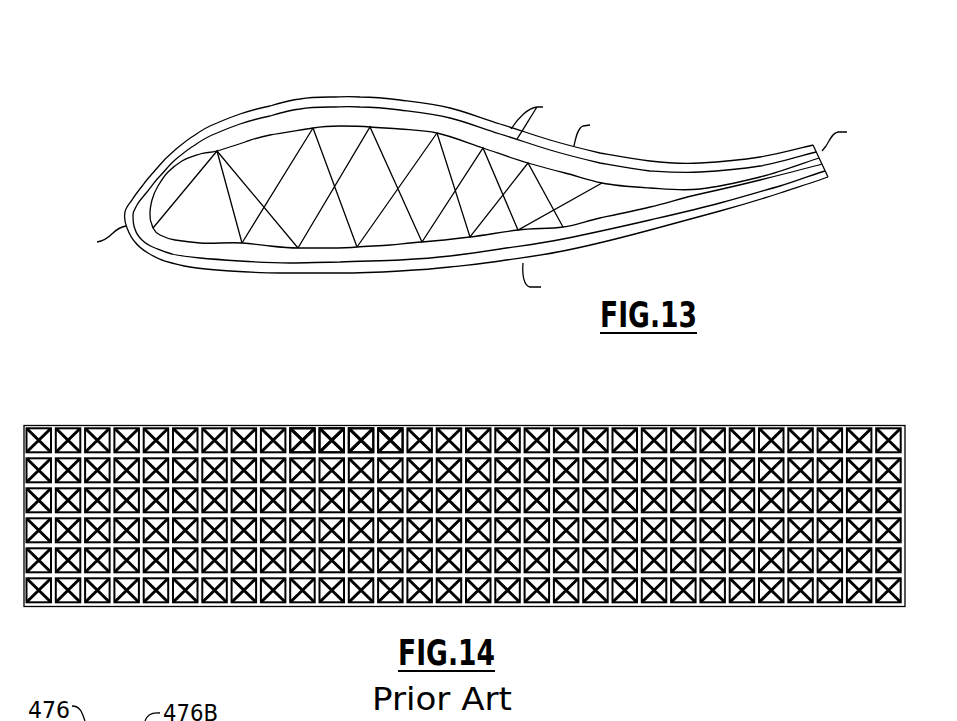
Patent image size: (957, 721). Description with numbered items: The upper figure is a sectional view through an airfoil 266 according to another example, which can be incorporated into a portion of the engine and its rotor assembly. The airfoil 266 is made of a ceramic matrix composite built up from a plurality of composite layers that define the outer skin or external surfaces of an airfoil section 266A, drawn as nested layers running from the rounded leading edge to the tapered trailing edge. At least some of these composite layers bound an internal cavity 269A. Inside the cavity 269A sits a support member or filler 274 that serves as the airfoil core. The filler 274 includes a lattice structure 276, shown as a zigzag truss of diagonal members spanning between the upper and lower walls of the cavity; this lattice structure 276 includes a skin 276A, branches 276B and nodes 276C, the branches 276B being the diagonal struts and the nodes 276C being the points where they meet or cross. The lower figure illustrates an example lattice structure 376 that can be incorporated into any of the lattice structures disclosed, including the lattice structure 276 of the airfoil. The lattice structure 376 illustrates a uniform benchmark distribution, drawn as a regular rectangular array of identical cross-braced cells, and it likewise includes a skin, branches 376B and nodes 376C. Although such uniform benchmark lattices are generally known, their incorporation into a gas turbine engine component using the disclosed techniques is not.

In FIG. 13, the airfoil 266 is at (198, 56).
In FIG. 13, the airfoil section 266A is at (217, 121).
In FIG. 13, the internal cavity 269A is at (411, 128).
In FIG. 13, the filler 274 is at (341, 112).
In FIG. 13, the lattice structure 276 is at (486, 179).
In FIG. 13, the skin 276A is at (393, 124).
In FIG. 13, the branches 276B is at (254, 228).
In FIG. 13, the nodes 276C is at (403, 186).
In FIG. 14, the lattice structure 376 is at (96, 420).
In FIG. 14, the branches 376B is at (331, 440).
In FIG. 14, the nodes 376C is at (381, 440).